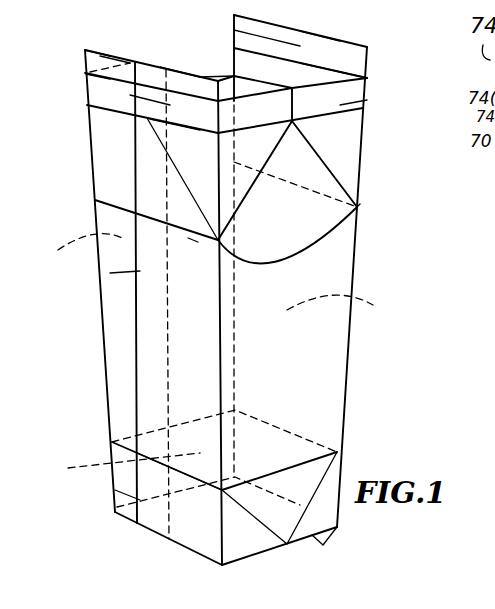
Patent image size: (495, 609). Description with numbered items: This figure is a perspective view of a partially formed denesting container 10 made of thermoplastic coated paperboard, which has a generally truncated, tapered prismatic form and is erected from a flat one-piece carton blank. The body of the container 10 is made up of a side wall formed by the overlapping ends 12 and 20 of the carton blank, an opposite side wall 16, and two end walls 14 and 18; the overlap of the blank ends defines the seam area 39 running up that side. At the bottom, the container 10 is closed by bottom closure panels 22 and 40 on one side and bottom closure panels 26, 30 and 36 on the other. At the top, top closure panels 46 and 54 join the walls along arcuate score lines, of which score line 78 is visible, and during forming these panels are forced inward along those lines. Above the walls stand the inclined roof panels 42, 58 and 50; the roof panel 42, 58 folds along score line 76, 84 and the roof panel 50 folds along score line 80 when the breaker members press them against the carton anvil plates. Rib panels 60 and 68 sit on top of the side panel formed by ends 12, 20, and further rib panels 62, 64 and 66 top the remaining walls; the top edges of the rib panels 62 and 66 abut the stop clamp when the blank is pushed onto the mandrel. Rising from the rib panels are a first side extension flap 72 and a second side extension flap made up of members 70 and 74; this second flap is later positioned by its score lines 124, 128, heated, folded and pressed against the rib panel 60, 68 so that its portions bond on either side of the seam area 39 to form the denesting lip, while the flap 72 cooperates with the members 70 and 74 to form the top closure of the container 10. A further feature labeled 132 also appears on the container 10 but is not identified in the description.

The container 10 is at (104, 527).
The side wall 12 is at (204, 344).
The end wall 14 is at (304, 379).
The side wall 16 is at (345, 307).
The end wall 18 is at (71, 244).
The side wall 20 is at (127, 304).
The bottom closure panel 22 is at (198, 528).
The bottom closure panel 26 is at (288, 495).
The bottom closure panel 30 is at (323, 537).
The bottom closure panel 36 is at (187, 443).
The seam area 39 is at (150, 270).
The bottom closure panel 40 is at (120, 487).
The inclined roof panel 42 is at (196, 219).
The top closure panel 46 is at (289, 229).
The inclined roof panel 50 is at (245, 88).
The top closure panel 54 is at (220, 67).
The inclined roof panel 58 is at (127, 192).
The rib panel 60 is at (193, 115).
The rib panel 62 is at (272, 122).
The rib panel 64 is at (303, 75).
The rib panel 66 is at (225, 95).
The rib panel 68 is at (100, 98).
The second side extension flap member 70 is at (178, 85).
The first side extension flap 72 is at (312, 38).
The second side extension flap member 74 is at (85, 50).
The score line 76 is at (193, 237).
The arcuate score line 78 is at (340, 228).
The score line 80 is at (360, 206).
The score line 84 is at (96, 202).
The score line 124 is at (190, 99).
The score line 128 is at (112, 75).
The flap edge 132 is at (348, 108).